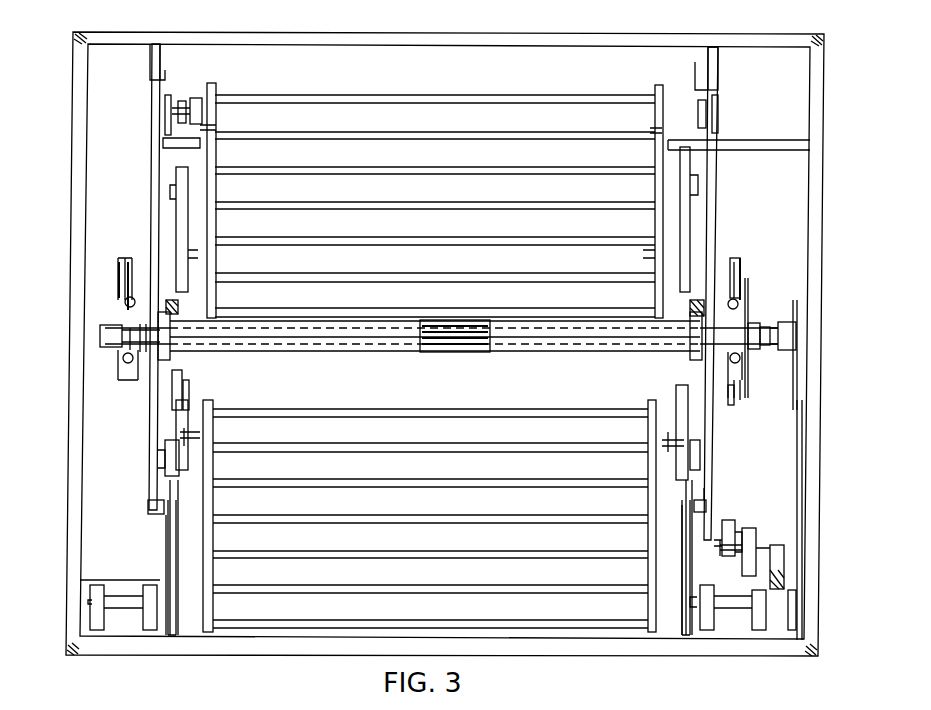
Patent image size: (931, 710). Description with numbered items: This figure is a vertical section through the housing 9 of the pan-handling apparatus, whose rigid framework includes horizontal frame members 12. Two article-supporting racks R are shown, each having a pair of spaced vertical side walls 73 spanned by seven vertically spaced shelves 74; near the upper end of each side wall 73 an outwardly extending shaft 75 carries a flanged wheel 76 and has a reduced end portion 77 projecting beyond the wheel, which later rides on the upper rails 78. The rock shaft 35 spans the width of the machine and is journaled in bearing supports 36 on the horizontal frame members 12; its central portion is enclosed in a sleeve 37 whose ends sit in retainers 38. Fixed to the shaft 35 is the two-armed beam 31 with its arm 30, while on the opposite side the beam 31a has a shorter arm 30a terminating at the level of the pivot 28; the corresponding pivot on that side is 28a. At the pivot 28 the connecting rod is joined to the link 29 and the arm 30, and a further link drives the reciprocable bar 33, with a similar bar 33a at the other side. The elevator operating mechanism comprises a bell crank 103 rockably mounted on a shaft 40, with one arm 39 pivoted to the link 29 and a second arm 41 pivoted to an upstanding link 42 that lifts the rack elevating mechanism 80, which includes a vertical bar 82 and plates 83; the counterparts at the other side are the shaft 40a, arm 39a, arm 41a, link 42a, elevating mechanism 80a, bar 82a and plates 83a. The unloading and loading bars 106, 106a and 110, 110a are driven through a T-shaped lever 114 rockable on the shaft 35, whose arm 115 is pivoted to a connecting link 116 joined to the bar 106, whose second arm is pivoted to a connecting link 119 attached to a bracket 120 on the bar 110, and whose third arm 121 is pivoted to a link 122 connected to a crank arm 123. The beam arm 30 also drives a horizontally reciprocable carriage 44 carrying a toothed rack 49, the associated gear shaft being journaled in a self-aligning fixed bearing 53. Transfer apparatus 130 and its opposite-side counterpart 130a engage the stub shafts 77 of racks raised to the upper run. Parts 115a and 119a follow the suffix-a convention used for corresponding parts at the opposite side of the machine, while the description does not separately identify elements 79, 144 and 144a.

The housing 9 is at (866, 22).
The horizontal frame members 12 is at (168, 300).
The pivot 28 is at (710, 508).
The pivot 28a is at (148, 504).
The link 29 is at (706, 494).
The arm of beam 30 is at (710, 472).
The arm of beam 30a is at (150, 458).
The two-armed beam 31 is at (716, 432).
The beam 31a is at (144, 408).
The reciprocable bar 33 is at (686, 508).
The reciprocable bar 33a is at (182, 490).
The rock shaft 35 is at (472, 352).
The bearing supports 36 is at (748, 322).
The sleeve 37 is at (594, 354).
The retainers 38 is at (178, 356).
The arm of bell crank 39 is at (692, 556).
The arm of bell crank 39a is at (168, 530).
The shaft 40 is at (742, 632).
The shaft 40a is at (134, 604).
The second arm of bell crank 41 is at (702, 628).
The second arm of bell crank 41a is at (162, 658).
The upstanding link 42 is at (658, 600).
The upstanding link 42a is at (190, 606).
The carriage 44 is at (736, 528).
The toothed rack 49 is at (756, 550).
The self-aligning fixed bearing 53 is at (764, 570).
The side walls 73 is at (222, 104).
The shelves 74 is at (442, 141).
The shaft 75 is at (198, 100).
The flanged wheel 76 is at (178, 100).
The reduced end portion 77 is at (172, 97).
The upper rails 78 is at (219, 128).
The pin 79 is at (204, 436).
The rack elevating mechanism 80 is at (698, 252).
The rack elevating mechanism 80a is at (158, 262).
The vertically extending bar 82 is at (656, 264).
The vertically extending bar 82a is at (200, 256).
The plate 83 is at (680, 198).
The plate 83a is at (194, 208).
The bell crank 103 is at (668, 550).
The bar 106 is at (746, 360).
The bar 106a is at (114, 354).
The bar 110 is at (748, 290).
The bar 110a is at (128, 292).
The T-shaped lever 114 is at (744, 378).
The arm of lever 115 is at (754, 314).
The collar 115a is at (102, 324).
The connecting link 116 is at (734, 402).
The connecting link 119 is at (740, 270).
The rod 119a is at (118, 262).
The bracket 120 is at (738, 262).
The third arm of lever 121 is at (796, 358).
The link 122 is at (810, 422).
The crank arm 123 is at (796, 604).
The transfer apparatus 130 is at (720, 129).
The transfer apparatus 130a is at (144, 110).
The vertical rail 144 is at (712, 210).
The vertical rail 144a is at (184, 183).
The racks R is at (528, 93).